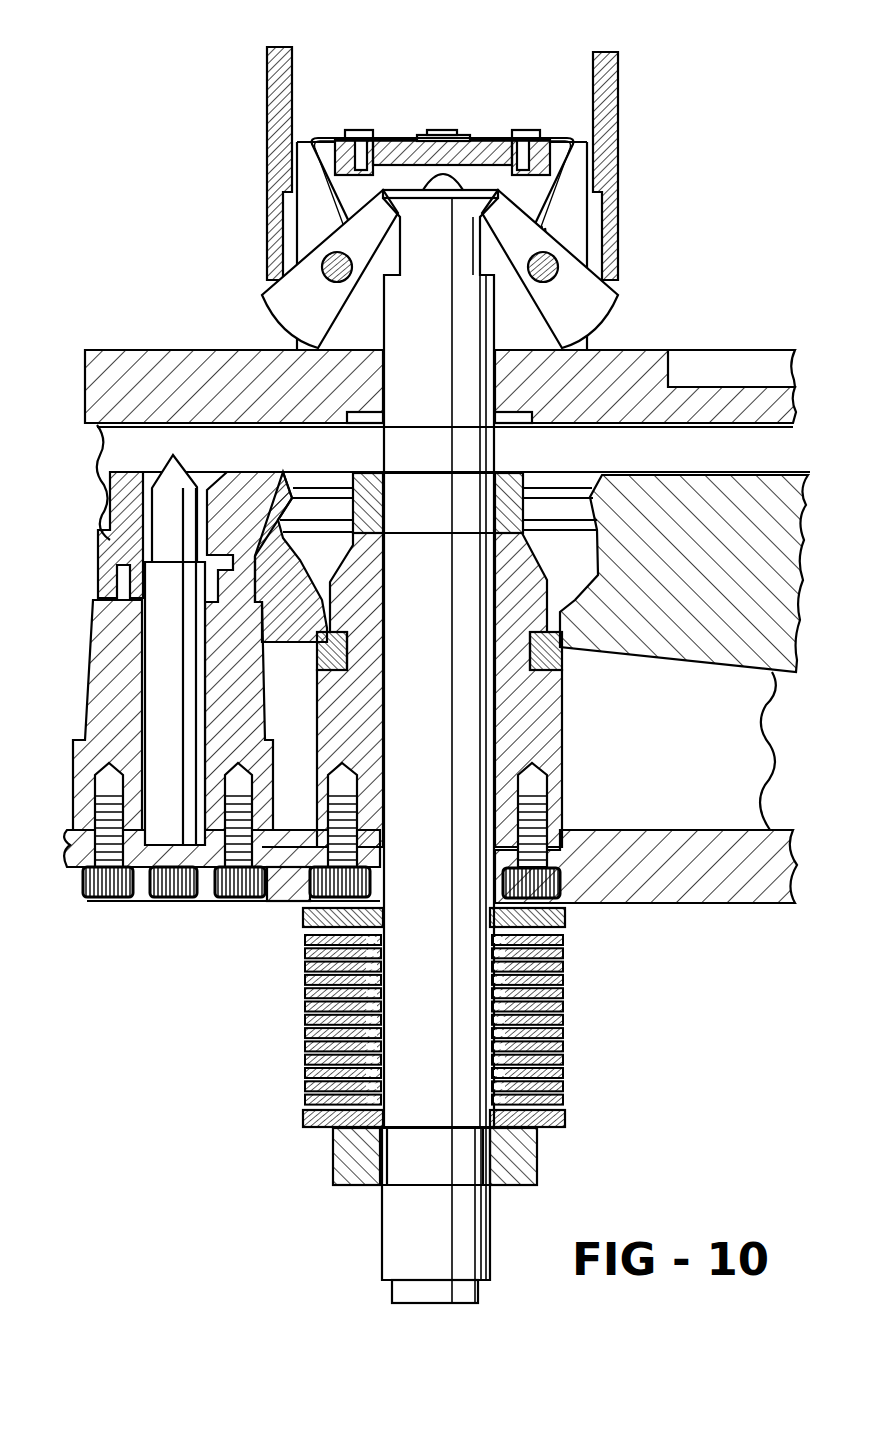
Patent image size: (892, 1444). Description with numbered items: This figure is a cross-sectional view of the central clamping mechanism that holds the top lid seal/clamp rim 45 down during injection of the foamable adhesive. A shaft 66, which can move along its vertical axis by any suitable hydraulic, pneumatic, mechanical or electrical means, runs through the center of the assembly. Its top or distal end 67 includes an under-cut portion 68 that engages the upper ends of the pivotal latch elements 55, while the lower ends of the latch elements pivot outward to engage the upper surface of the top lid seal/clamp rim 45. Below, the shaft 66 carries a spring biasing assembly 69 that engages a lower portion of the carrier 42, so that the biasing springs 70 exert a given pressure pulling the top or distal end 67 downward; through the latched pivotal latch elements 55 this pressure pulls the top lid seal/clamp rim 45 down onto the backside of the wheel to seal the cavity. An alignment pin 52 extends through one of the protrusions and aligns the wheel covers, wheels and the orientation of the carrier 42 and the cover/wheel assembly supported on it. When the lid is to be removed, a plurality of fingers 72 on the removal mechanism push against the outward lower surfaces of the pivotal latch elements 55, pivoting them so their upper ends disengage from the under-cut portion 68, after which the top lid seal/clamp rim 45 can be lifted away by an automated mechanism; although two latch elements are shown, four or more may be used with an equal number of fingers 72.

The carrier 42 is at (698, 890).
The top lid seal/clamp rim 45 is at (138, 353).
The alignment pin 52 is at (173, 509).
The pivotal latch elements 55 is at (284, 312).
The shaft 66 is at (397, 1265).
The top or distal end 67 is at (473, 193).
The under-cut portion 68 is at (418, 205).
The spring biasing assembly 69 is at (362, 1025).
The biasing springs 70 is at (303, 1077).
The fingers 72 is at (268, 147).